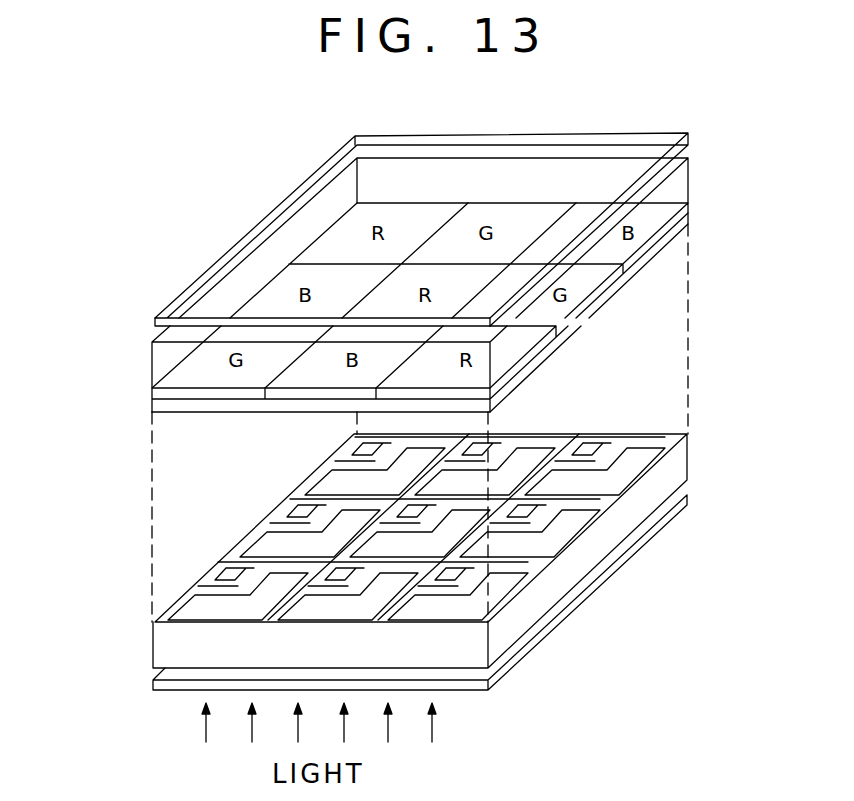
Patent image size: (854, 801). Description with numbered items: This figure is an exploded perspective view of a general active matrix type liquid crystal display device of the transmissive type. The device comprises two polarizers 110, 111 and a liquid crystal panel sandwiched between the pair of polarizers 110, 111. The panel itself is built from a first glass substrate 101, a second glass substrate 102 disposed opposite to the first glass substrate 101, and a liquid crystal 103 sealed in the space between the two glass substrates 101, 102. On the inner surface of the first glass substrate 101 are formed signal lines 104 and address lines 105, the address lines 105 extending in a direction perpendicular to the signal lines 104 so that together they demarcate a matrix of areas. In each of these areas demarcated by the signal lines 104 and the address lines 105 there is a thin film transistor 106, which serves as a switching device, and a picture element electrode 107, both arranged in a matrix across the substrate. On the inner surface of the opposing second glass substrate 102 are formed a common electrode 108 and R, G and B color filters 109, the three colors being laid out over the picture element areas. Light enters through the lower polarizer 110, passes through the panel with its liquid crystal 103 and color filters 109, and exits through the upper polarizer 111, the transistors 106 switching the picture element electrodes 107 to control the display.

The first glass substrate 101 is at (151, 642).
The second glass substrate 102 is at (151, 370).
The liquid crystal 103 is at (672, 328).
The signal lines 104 is at (566, 433).
The address lines 105 is at (573, 500).
The thin film transistors 106 is at (446, 578).
The picture element electrodes 107 is at (504, 581).
The common electrode 108 is at (690, 225).
The color filters 109 is at (690, 204).
The polarizer 110 is at (151, 689).
The polarizer 111 is at (153, 321).